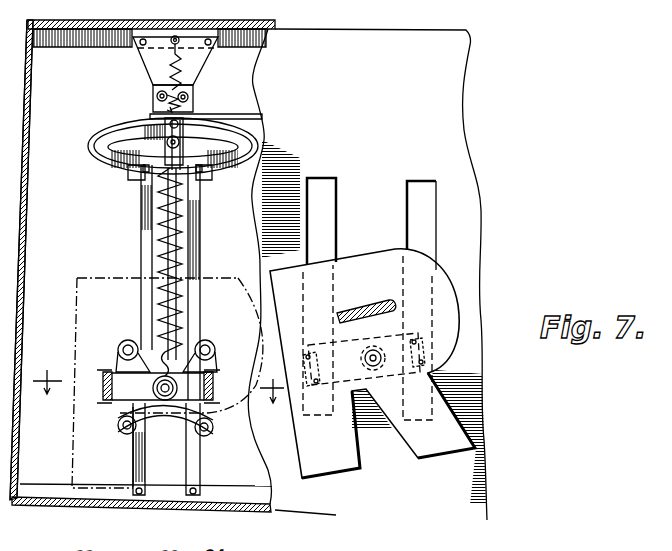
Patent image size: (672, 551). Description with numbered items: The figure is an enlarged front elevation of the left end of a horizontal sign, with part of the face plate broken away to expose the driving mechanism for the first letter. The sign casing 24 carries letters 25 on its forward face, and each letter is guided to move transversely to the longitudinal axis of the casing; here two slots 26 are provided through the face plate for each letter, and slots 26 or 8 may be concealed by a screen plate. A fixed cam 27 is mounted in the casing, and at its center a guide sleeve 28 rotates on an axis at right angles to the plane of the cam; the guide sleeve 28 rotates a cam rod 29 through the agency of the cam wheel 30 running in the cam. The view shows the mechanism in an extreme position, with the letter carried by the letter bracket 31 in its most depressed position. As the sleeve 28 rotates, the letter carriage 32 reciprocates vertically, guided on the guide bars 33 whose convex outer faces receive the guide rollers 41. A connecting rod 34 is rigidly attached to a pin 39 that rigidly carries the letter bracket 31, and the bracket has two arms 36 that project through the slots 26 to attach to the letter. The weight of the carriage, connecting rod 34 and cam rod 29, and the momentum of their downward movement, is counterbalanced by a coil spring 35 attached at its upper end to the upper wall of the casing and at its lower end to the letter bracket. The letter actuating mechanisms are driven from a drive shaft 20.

The slots 8 is at (158, 395).
The drive shaft 20 is at (254, 112).
The sign casing 24 is at (344, 25).
The letters 25 is at (387, 252).
The slots 26 is at (412, 206).
The fixed cam 27 is at (114, 130).
The guide sleeve 28 is at (157, 133).
The cam rod 29 is at (167, 188).
The cam wheel 30 is at (190, 130).
The letter bracket 31 is at (367, 396).
The letter carriage 32 is at (213, 357).
The guide bars 33 is at (200, 240).
The connecting rod 34 is at (195, 300).
The coil spring 35 is at (162, 256).
The arms 36 is at (420, 358).
The pin 39 is at (373, 345).
The guide rollers 41 is at (205, 437).